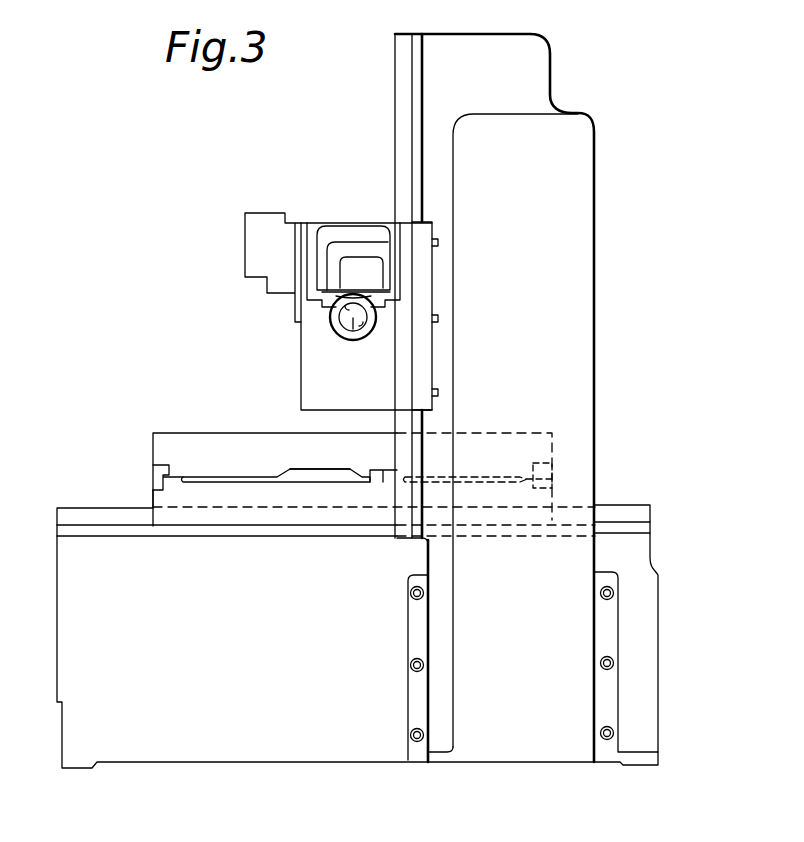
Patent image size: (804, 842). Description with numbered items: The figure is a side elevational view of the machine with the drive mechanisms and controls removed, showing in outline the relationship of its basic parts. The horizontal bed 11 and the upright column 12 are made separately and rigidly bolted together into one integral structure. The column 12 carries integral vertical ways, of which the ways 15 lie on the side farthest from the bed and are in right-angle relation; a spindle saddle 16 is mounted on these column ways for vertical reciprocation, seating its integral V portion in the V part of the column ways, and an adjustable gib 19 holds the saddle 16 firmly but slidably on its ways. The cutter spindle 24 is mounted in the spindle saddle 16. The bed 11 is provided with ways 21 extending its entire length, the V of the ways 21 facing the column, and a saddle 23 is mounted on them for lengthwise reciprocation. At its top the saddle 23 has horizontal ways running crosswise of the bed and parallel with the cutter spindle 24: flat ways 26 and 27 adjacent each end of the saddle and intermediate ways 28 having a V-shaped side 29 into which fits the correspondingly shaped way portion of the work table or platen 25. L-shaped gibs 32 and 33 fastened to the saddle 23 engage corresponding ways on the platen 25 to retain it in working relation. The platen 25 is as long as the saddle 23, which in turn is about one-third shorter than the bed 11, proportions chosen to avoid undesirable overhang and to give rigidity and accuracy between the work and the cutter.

The bed 11 is at (67, 566).
The column 12 is at (432, 89).
The ways 15 is at (415, 147).
The spindle saddle 16 is at (300, 347).
The adjustable gib 19 is at (428, 274).
The ways 21 is at (85, 514).
The saddle 23 is at (157, 500).
The cutter spindle 24 is at (355, 326).
The work table or platen 25 is at (189, 433).
The flat way 26 is at (176, 479).
The flat way 27 is at (527, 477).
The intermediate ways 28 is at (384, 470).
The V-shaped side 29 is at (358, 469).
The L-shaped gib 32 is at (155, 480).
The L-shaped gib 33 is at (553, 469).